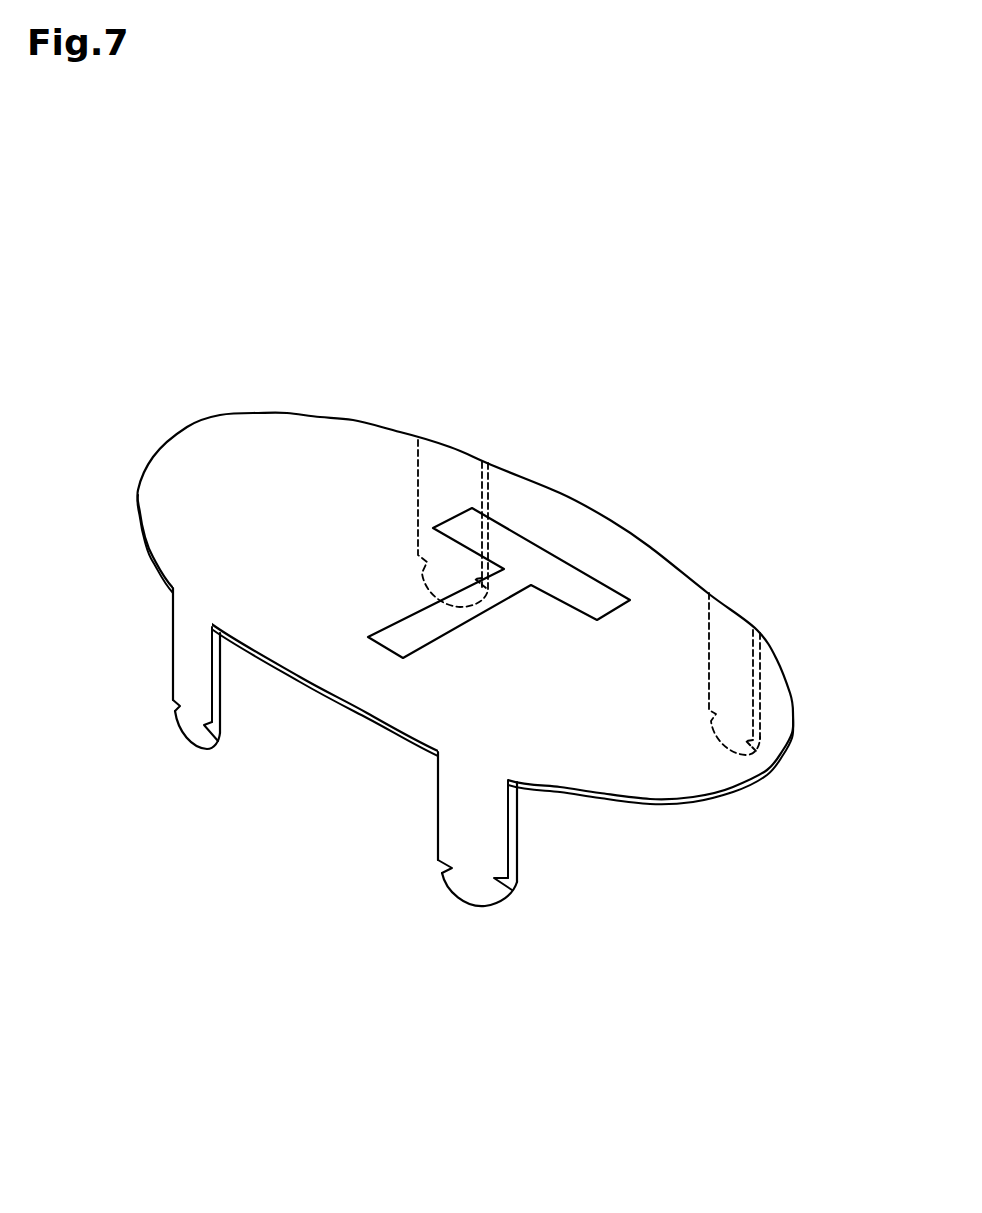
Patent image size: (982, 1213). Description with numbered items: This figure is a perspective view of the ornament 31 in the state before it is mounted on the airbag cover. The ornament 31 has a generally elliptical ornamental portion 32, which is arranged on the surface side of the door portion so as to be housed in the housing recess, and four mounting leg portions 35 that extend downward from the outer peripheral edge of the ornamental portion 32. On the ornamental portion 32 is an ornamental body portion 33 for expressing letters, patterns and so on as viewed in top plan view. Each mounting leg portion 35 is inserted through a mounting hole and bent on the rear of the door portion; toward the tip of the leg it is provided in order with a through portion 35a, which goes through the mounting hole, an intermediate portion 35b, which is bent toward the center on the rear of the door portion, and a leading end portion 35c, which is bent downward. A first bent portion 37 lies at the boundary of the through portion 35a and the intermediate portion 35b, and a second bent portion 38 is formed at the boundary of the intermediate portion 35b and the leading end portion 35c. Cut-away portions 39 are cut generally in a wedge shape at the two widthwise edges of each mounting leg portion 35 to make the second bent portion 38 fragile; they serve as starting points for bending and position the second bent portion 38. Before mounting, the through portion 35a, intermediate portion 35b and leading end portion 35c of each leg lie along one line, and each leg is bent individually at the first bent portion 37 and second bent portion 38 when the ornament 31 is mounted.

The ornament 31 is at (447, 694).
The ornamental portion 32 is at (683, 597).
The ornamental body portion 33 is at (593, 595).
The mounting leg portion 35 is at (434, 694).
The through portion 35a is at (193, 628).
The intermediate portion 35b is at (200, 697).
The leading end portion 35c is at (183, 733).
The first bent portion 37 is at (185, 652).
The second bent portion 38 is at (190, 713).
The cut-away portion 39 is at (178, 703).